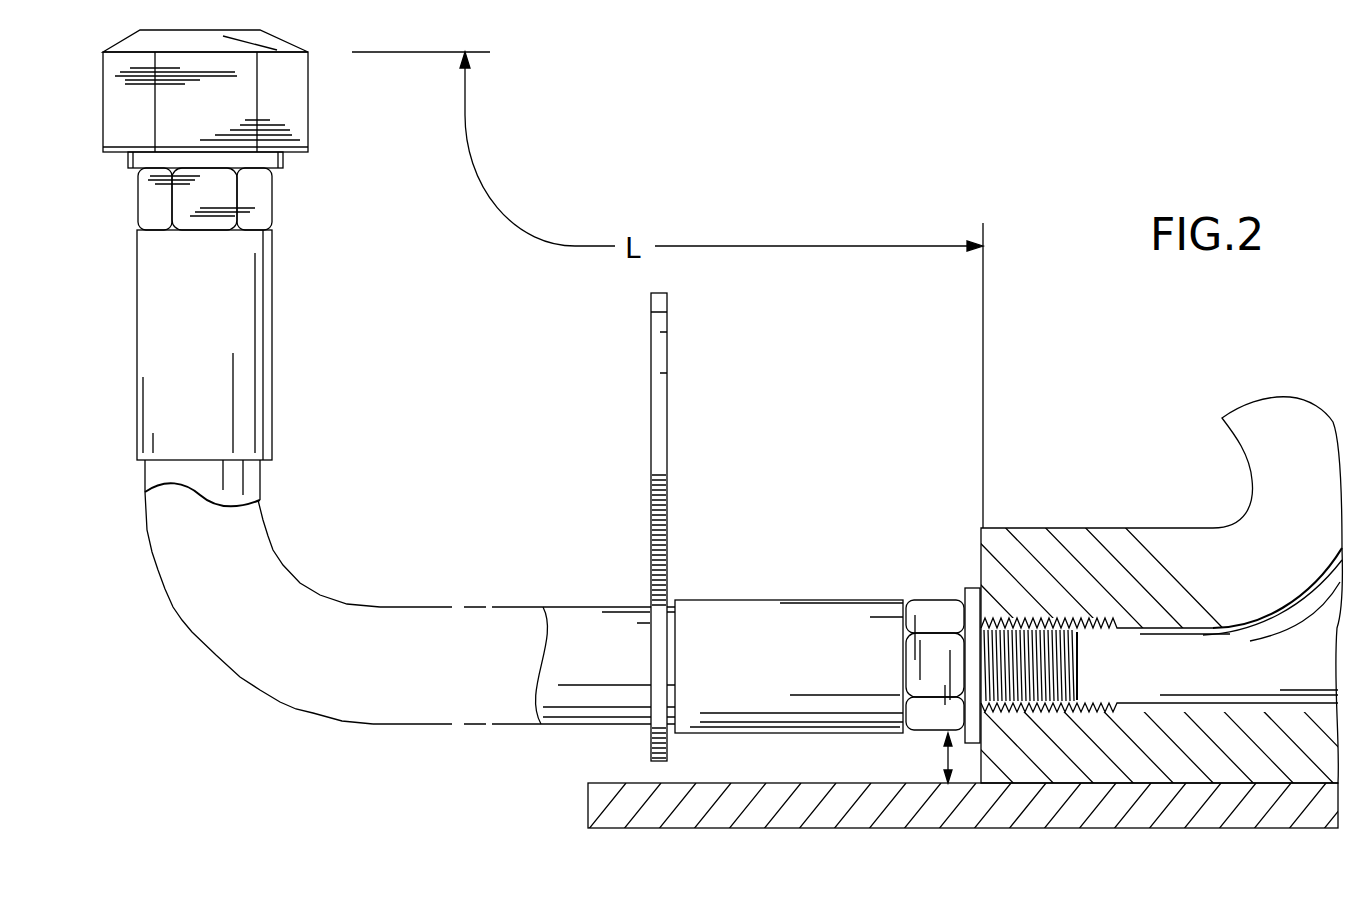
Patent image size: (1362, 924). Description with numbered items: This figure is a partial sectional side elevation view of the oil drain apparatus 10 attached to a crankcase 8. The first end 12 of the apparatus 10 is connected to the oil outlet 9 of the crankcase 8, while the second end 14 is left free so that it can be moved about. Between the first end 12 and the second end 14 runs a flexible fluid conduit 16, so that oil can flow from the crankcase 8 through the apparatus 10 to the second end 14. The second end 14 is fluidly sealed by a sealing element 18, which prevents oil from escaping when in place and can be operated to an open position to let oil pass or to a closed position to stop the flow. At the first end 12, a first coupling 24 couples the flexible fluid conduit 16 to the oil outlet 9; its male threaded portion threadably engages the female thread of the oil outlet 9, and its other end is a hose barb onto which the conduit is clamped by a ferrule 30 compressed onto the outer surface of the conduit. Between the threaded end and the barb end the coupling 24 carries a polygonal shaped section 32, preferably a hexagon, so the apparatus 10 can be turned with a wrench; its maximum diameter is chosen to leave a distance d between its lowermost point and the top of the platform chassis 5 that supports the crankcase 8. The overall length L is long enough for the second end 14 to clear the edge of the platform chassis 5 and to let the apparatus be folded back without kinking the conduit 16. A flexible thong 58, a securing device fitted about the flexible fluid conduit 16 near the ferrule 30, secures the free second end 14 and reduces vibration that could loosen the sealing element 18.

The sealing element 18 is at (130, 124).
The second end 14 is at (300, 200).
The apparatus 10 is at (490, 572).
The flexible fluid conduit 16 is at (593, 605).
The flexible thong 58 is at (651, 417).
The ferrule 30 is at (773, 598).
The polygonal shaped section 32 is at (930, 600).
The first coupling 24 is at (947, 599).
The crankcase 8 is at (1250, 500).
The oil outlet 9 is at (1175, 663).
The first end 12 is at (917, 743).
The platform chassis 5 is at (675, 828).